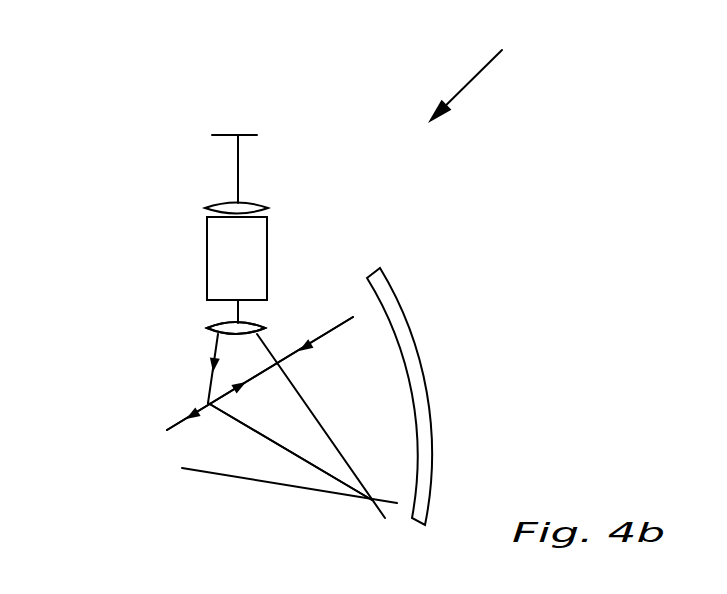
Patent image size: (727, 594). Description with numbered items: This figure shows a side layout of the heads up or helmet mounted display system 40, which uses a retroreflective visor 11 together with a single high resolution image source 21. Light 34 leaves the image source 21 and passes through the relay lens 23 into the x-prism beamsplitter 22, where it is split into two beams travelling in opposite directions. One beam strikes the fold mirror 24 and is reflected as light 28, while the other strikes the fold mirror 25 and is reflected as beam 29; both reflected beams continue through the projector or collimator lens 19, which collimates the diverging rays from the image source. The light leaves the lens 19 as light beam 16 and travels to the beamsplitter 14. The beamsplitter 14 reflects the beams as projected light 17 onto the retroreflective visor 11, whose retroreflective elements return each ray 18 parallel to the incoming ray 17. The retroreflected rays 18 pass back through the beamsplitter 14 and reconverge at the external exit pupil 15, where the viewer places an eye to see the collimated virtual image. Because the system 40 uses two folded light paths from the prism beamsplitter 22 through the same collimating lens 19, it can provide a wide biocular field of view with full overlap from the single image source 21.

The retroreflective visor 11 is at (402, 312).
The beamsplitter 14 is at (237, 418).
The exit pupil 15 is at (148, 450).
The light beam exiting projector lens 16 is at (212, 367).
The projected image light 17 is at (240, 388).
The retroreflected ray 18 is at (303, 353).
The projector lens 19 is at (265, 328).
The image source 21 is at (238, 135).
The x-prism beamsplitter 22 is at (207, 250).
The relay lens 23 is at (265, 207).
The fold mirror 24 is at (237, 258).
The fold mirror 25 is at (237, 258).
The reflected light 28 is at (207, 301).
The reflected beam 29 is at (236, 328).
The light from image source 34 is at (238, 162).
The heads up or helmet mounted display system 40 is at (484, 69).